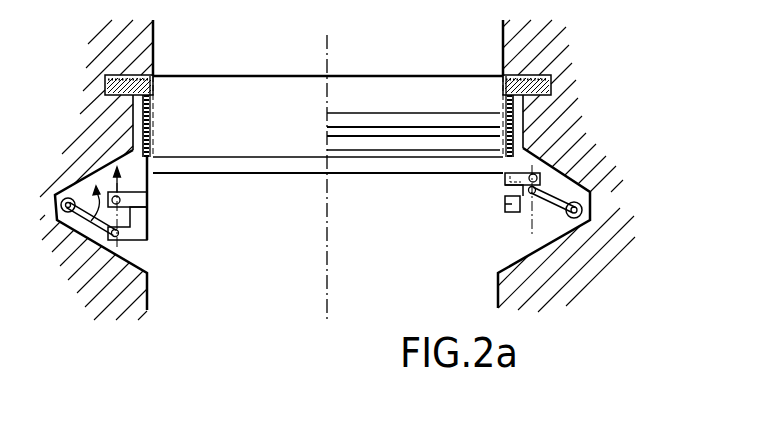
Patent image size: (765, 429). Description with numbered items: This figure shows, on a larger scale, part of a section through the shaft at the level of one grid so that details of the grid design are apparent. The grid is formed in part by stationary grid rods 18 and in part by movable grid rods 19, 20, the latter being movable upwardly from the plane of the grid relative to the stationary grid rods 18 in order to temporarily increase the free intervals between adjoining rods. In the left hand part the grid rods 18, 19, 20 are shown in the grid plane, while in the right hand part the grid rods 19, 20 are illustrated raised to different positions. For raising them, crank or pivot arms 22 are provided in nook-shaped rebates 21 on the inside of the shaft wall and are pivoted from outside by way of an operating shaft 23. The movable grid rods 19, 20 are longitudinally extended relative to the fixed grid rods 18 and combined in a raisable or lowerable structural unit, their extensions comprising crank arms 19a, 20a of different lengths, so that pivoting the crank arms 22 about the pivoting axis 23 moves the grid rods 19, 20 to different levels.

The stationary grid rods 18 is at (440, 167).
The movable grid rod 19 is at (387, 145).
The movable grid rod 20 is at (365, 122).
The crank arm 19a is at (134, 200).
The crank arm 20a is at (132, 239).
The nook-shaped rebate 21 is at (123, 252).
The crank or pivot arm 22 is at (558, 204).
The operating shaft 23 is at (583, 209).